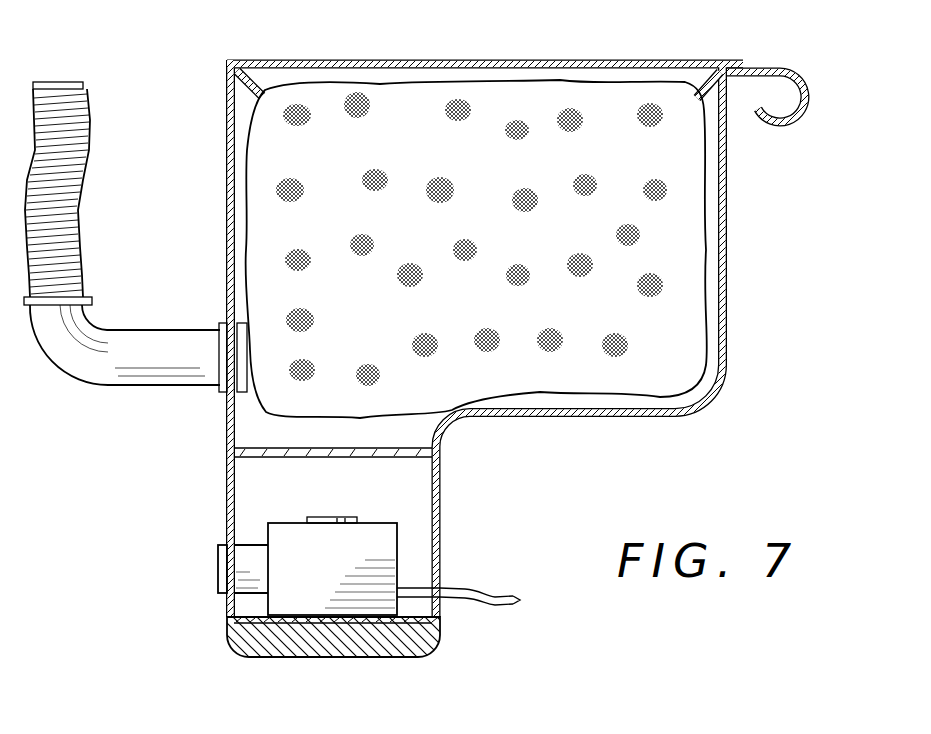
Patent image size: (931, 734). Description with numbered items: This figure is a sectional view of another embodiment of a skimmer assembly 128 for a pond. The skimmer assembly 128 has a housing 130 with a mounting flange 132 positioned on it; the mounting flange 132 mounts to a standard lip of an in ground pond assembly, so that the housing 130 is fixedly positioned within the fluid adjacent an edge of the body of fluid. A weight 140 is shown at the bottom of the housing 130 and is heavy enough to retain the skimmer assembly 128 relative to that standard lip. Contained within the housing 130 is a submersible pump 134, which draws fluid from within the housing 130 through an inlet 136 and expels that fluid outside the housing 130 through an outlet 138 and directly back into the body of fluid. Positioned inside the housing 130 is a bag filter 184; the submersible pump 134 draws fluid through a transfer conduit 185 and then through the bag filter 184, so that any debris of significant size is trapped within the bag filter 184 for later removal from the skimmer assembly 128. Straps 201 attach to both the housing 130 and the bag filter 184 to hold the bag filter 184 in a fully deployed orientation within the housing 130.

The skimmer assembly 128 is at (588, 473).
The housing 130 is at (228, 242).
The mounting flange 132 is at (793, 110).
The submersible pump 134 is at (398, 539).
The inlet 136 is at (262, 412).
The outlet 138 is at (219, 582).
The weight 140 is at (412, 655).
The bag filter 184 is at (363, 113).
The transfer conduit 185 is at (84, 181).
The straps 201 is at (248, 90).